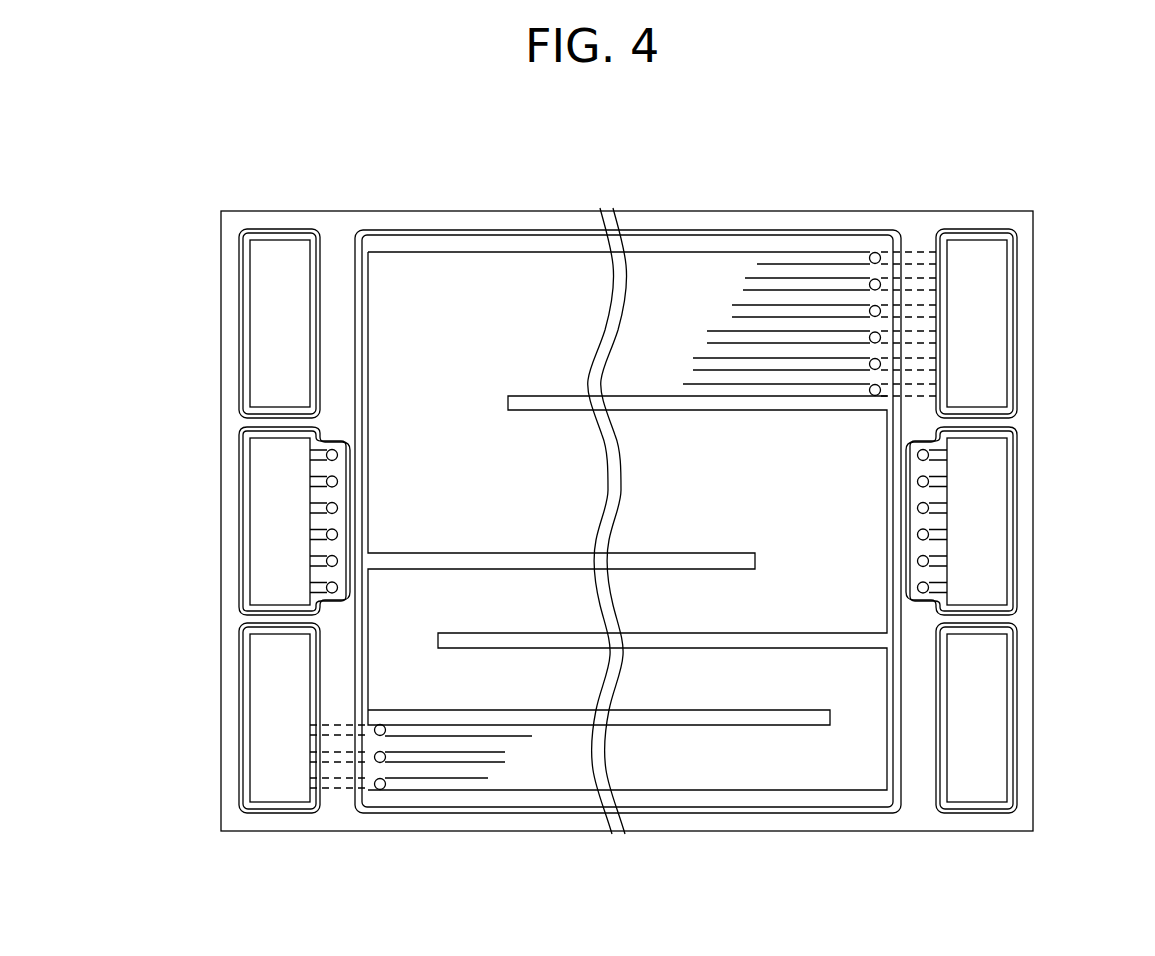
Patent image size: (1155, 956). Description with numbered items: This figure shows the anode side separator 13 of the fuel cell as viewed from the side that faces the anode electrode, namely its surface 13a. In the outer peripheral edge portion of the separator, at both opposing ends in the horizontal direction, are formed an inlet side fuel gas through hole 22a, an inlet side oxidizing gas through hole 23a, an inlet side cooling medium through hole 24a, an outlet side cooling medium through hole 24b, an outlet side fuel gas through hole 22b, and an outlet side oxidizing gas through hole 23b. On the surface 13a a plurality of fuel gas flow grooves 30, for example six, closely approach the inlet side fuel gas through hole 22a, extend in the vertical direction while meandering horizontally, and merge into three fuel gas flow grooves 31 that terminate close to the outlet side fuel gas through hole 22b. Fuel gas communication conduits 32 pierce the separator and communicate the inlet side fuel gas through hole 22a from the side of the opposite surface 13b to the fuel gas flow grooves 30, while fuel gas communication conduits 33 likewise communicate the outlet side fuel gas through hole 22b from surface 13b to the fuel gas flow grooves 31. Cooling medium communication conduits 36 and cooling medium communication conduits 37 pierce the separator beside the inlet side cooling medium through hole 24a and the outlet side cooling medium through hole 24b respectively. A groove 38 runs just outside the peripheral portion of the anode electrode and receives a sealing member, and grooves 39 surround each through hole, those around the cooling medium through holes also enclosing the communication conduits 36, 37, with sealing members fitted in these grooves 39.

The anode side separator 13 is at (704, 212).
The surface 13a is at (647, 222).
The surface 13b is at (479, 240).
The inlet side fuel gas through hole 22a is at (980, 325).
The outlet side fuel gas through hole 22b is at (275, 700).
The inlet side oxidizing gas through hole 23a is at (270, 323).
The outlet side oxidizing gas through hole 23b is at (985, 710).
The inlet side cooling medium through hole 24a is at (985, 522).
The outlet side cooling medium through hole 24b is at (275, 516).
The fuel gas flow grooves 30 is at (822, 283).
The fuel gas flow grooves 31 is at (433, 757).
The fuel gas communication conduits 32 is at (870, 286).
The fuel gas communication conduits 33 is at (388, 759).
The cooling medium communication conduits 36 is at (918, 482).
The cooling medium communication conduits 37 is at (338, 455).
The groove 38 is at (722, 812).
The grooves 39 is at (240, 395).